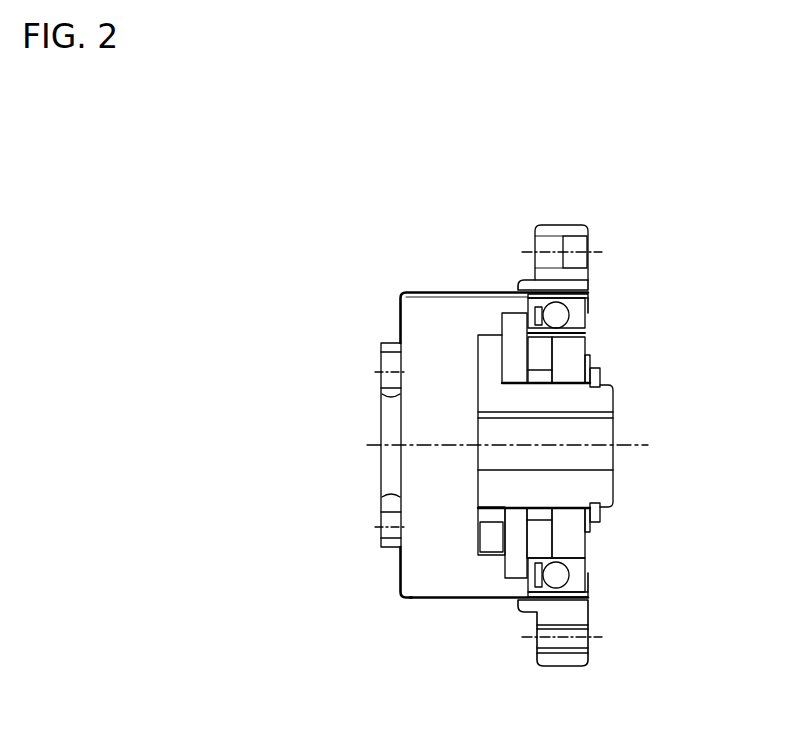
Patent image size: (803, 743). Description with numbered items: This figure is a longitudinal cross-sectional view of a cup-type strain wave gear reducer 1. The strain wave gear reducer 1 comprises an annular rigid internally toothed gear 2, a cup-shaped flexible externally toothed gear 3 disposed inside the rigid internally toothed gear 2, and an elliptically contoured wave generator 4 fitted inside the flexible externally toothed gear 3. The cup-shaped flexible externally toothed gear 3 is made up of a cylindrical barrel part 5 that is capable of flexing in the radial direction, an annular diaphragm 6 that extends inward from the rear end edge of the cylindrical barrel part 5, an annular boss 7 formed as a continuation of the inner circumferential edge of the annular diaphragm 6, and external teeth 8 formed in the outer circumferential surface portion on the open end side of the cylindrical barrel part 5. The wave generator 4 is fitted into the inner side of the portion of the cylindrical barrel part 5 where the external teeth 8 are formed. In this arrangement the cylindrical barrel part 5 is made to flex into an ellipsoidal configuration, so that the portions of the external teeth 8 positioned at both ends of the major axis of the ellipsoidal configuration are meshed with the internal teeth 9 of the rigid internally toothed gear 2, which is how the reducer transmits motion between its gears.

The strain wave gear reducer 1 is at (648, 203).
The rigid internally toothed gear 2 is at (591, 282).
The flexible externally toothed gear 3 is at (452, 281).
The wave generator 4 is at (597, 347).
The cylindrical barrel part 5 is at (452, 600).
The annular diaphragm 6 is at (399, 578).
The annular boss 7 is at (395, 507).
The external teeth 8 is at (567, 603).
The internal teeth 9 is at (560, 595).